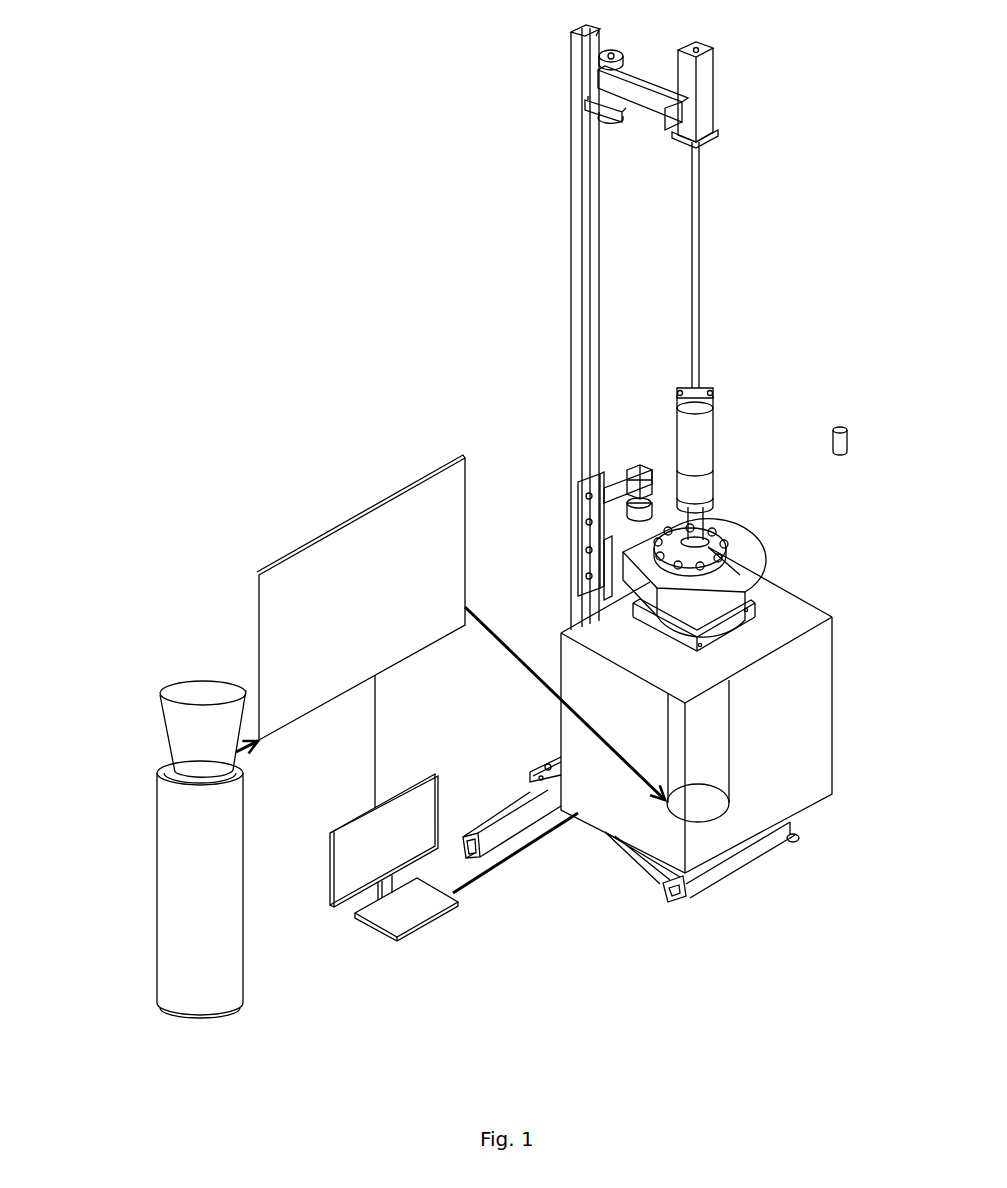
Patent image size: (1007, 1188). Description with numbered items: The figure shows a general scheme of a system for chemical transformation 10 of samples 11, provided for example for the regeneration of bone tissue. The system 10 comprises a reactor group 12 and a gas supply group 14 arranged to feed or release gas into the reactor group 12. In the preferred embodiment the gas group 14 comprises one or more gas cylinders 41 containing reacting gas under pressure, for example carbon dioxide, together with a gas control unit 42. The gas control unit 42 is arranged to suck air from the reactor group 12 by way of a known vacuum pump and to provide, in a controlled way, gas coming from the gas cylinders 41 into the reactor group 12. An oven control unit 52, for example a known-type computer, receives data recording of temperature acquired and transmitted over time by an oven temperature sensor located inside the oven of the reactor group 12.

The system for chemical transformation 10 is at (383, 276).
The sample 11 is at (837, 437).
The reactor group 12 is at (721, 226).
The gas supply group 14 is at (258, 457).
The gas cylinder 41 is at (148, 824).
The gas control unit 42 is at (384, 457).
The oven control unit 52 is at (452, 935).